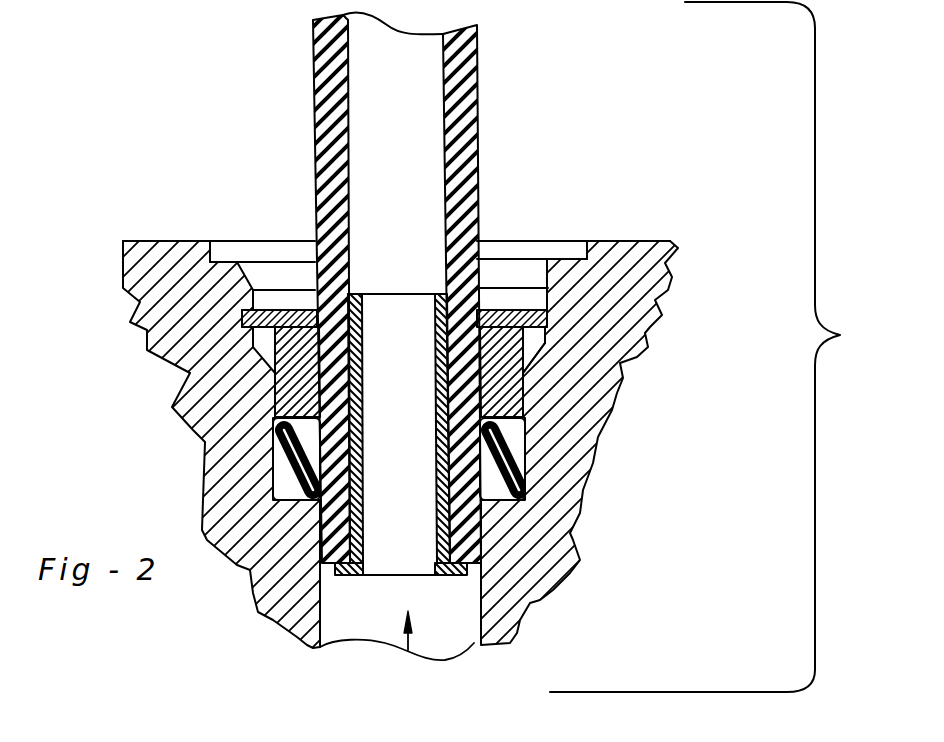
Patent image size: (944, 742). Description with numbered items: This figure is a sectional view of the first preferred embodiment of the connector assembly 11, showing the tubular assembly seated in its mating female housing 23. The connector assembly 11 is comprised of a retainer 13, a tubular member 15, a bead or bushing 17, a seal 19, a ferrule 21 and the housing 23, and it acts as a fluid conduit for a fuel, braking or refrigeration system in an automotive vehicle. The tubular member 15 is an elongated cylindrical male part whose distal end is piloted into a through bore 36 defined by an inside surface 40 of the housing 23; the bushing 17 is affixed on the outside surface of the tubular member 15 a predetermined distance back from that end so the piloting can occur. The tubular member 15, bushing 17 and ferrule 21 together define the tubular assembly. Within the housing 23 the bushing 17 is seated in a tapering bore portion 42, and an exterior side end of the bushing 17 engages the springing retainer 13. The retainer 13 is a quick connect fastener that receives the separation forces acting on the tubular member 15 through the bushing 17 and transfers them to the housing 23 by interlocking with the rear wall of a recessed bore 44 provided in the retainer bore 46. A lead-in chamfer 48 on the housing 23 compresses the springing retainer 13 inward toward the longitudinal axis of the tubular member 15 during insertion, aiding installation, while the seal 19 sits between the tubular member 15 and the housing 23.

The connector assembly 11 is at (715, 347).
The retainer 13 is at (533, 313).
The tubular member 15 is at (477, 57).
The bushing 17 is at (505, 390).
The seal 19 is at (520, 478).
The ferrule 21 is at (437, 520).
The housing 23 is at (640, 247).
The through bore 36 is at (408, 650).
The inside surface 40 is at (320, 602).
The tapering bore portion 42 is at (533, 347).
The recessed bore 44 is at (242, 320).
The retainer bore 46 is at (537, 287).
The lead-in chamfer 48 is at (540, 247).